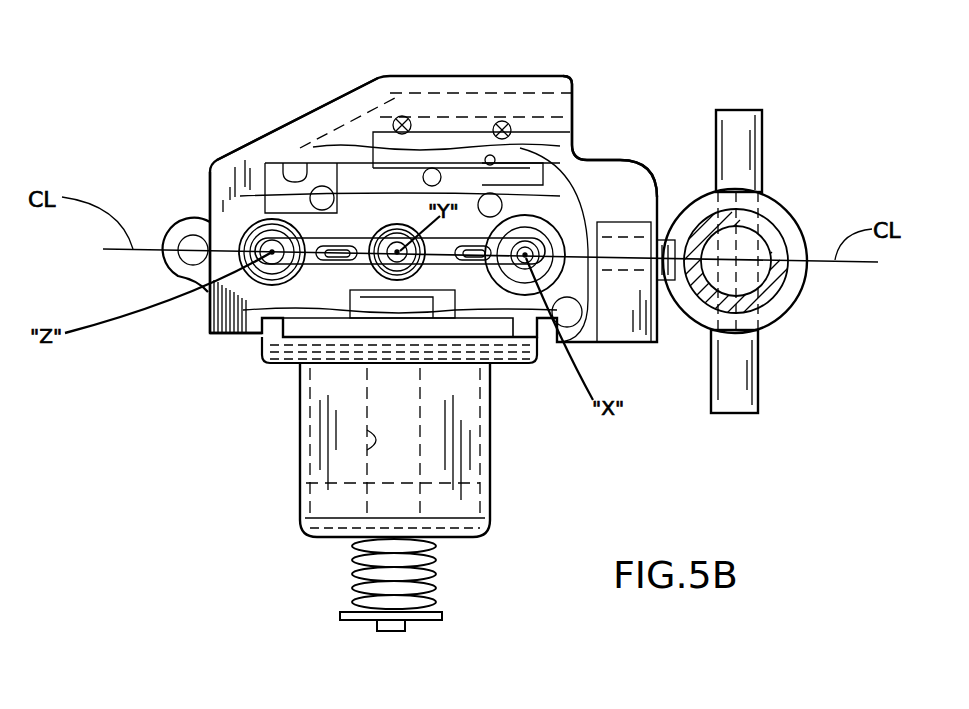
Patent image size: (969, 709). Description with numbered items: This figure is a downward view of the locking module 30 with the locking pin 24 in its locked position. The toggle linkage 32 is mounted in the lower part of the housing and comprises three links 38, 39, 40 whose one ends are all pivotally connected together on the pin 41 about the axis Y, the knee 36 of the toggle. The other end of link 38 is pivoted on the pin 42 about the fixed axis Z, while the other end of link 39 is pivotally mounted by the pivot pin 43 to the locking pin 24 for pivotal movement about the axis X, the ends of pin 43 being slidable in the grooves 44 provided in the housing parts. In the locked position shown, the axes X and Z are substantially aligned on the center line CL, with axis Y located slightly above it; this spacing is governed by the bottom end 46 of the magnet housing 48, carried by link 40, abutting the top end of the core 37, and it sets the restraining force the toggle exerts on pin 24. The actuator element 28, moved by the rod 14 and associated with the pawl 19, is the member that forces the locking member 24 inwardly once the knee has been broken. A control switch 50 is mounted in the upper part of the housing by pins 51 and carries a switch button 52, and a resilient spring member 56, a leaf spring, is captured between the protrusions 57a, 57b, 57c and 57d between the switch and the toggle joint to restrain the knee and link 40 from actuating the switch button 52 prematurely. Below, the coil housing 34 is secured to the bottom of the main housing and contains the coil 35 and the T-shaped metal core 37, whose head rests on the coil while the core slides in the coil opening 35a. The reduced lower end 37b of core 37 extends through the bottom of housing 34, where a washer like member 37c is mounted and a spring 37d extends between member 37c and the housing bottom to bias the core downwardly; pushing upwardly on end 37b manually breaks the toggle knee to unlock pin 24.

The rod 14 is at (775, 287).
The pawl 19 is at (748, 147).
The locking pin 24 is at (664, 230).
The actuator element 28 is at (783, 220).
The module 30 is at (170, 274).
The toggle linkage 32 is at (263, 302).
The coil housing 34 is at (491, 432).
The coil 35 is at (465, 477).
The opening of coil 35a is at (300, 435).
The knee 36 is at (387, 218).
The core 37 is at (300, 487).
The lower end of core 37b is at (375, 613).
The washer like member 37c is at (420, 618).
The spring 37d is at (440, 570).
The link 38 is at (326, 243).
The link 39 is at (502, 206).
The link 40 is at (322, 300).
The pin 41 is at (410, 228).
The pin 42 is at (205, 235).
The pivot pin 43 is at (543, 285).
The grooves 44 is at (532, 235).
The bottom end of housing 46 is at (300, 385).
The housing 48 is at (430, 310).
The control switch 50 is at (430, 168).
The pins 51 is at (397, 117).
The switch button 52 is at (410, 235).
The resilient spring member 56 is at (395, 188).
The protrusion 57a is at (265, 168).
The protrusion 57b is at (212, 178).
The protrusion 57c is at (560, 200).
The protrusion 57d is at (570, 88).